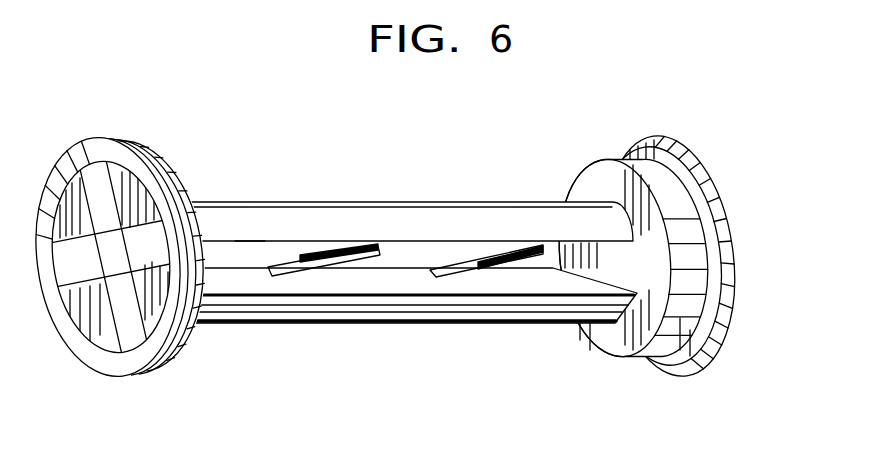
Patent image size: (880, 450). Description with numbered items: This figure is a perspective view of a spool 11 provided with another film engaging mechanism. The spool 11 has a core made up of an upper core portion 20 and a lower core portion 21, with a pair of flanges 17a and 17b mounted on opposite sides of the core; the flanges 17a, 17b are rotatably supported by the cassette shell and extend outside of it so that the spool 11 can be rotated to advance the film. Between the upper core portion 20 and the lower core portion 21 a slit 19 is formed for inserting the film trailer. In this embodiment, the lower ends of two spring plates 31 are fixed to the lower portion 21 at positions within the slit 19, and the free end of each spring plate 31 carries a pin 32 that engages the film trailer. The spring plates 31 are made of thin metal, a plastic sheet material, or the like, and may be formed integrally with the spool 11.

The spool 11 is at (412, 269).
The flange 17a is at (176, 205).
The flange 17b is at (675, 197).
The slit 19 is at (239, 242).
The upper core portion 20 is at (518, 220).
The lower core portion 21 is at (238, 322).
The spring plate 31 is at (341, 268).
The pin 32 is at (316, 242).